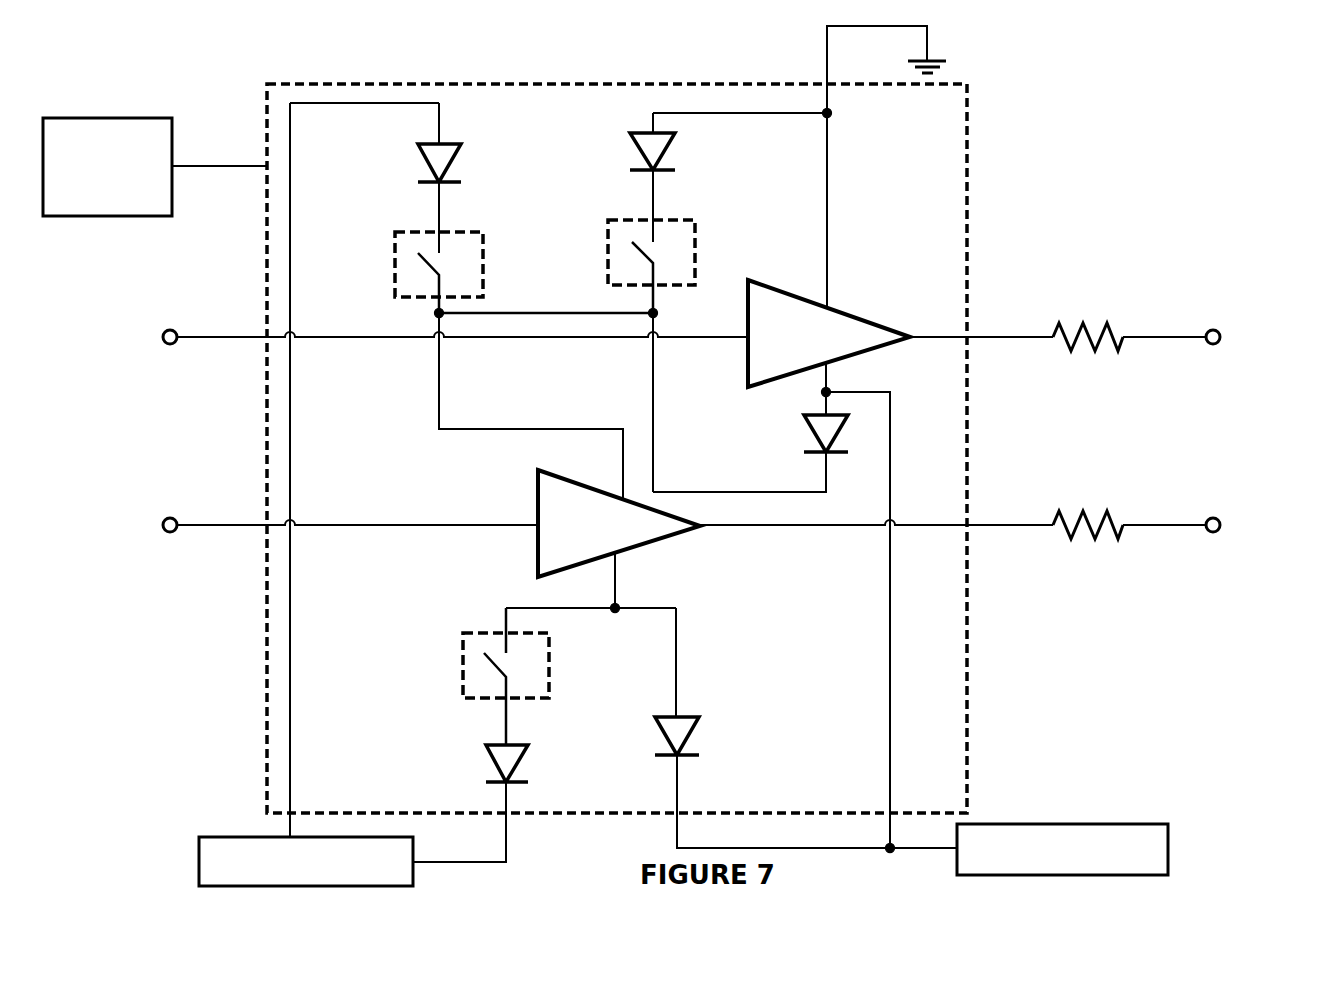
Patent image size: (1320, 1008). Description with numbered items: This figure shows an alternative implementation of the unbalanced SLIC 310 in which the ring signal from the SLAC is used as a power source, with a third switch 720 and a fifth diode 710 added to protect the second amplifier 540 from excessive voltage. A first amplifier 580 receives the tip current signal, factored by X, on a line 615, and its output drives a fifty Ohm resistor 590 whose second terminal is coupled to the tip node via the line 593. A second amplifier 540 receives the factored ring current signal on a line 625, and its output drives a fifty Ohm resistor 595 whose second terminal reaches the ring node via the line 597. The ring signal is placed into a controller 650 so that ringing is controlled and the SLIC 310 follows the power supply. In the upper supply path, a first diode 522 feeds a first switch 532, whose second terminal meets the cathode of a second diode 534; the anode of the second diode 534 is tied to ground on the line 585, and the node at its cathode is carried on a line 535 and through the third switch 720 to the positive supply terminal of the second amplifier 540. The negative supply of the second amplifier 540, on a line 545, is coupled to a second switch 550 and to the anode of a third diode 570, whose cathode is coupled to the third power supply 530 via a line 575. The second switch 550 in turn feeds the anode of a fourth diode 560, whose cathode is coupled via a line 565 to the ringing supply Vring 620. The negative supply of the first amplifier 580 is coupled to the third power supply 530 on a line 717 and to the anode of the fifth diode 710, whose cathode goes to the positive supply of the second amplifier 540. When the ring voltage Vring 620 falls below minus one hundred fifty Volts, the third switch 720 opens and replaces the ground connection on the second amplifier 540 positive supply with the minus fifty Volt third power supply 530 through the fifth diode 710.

The SLIC 310 is at (530, 83).
The first diode 522 is at (420, 182).
The third power supply 530 is at (1030, 824).
The first switch 532 is at (467, 232).
The second diode 534 is at (670, 140).
The line 535 is at (462, 432).
The second amplifier 540 is at (538, 515).
The line 545 is at (676, 632).
The second switch 550 is at (463, 655).
The fourth diode 560 is at (485, 753).
The line 565 is at (505, 802).
The third diode 570 is at (697, 730).
The line 575 is at (677, 797).
The first amplifier 580 is at (865, 314).
The line 585 is at (827, 206).
The resistor 590 is at (1103, 322).
The line 593 is at (1190, 330).
The resistor 595 is at (1107, 510).
The line 597 is at (1190, 530).
The line 615 is at (407, 340).
The Vring supply 620 is at (245, 837).
The line 625 is at (378, 530).
The controller 650 is at (107, 117).
The fifth diode 710 is at (813, 443).
The line 717 is at (890, 473).
The third switch 720 is at (695, 272).